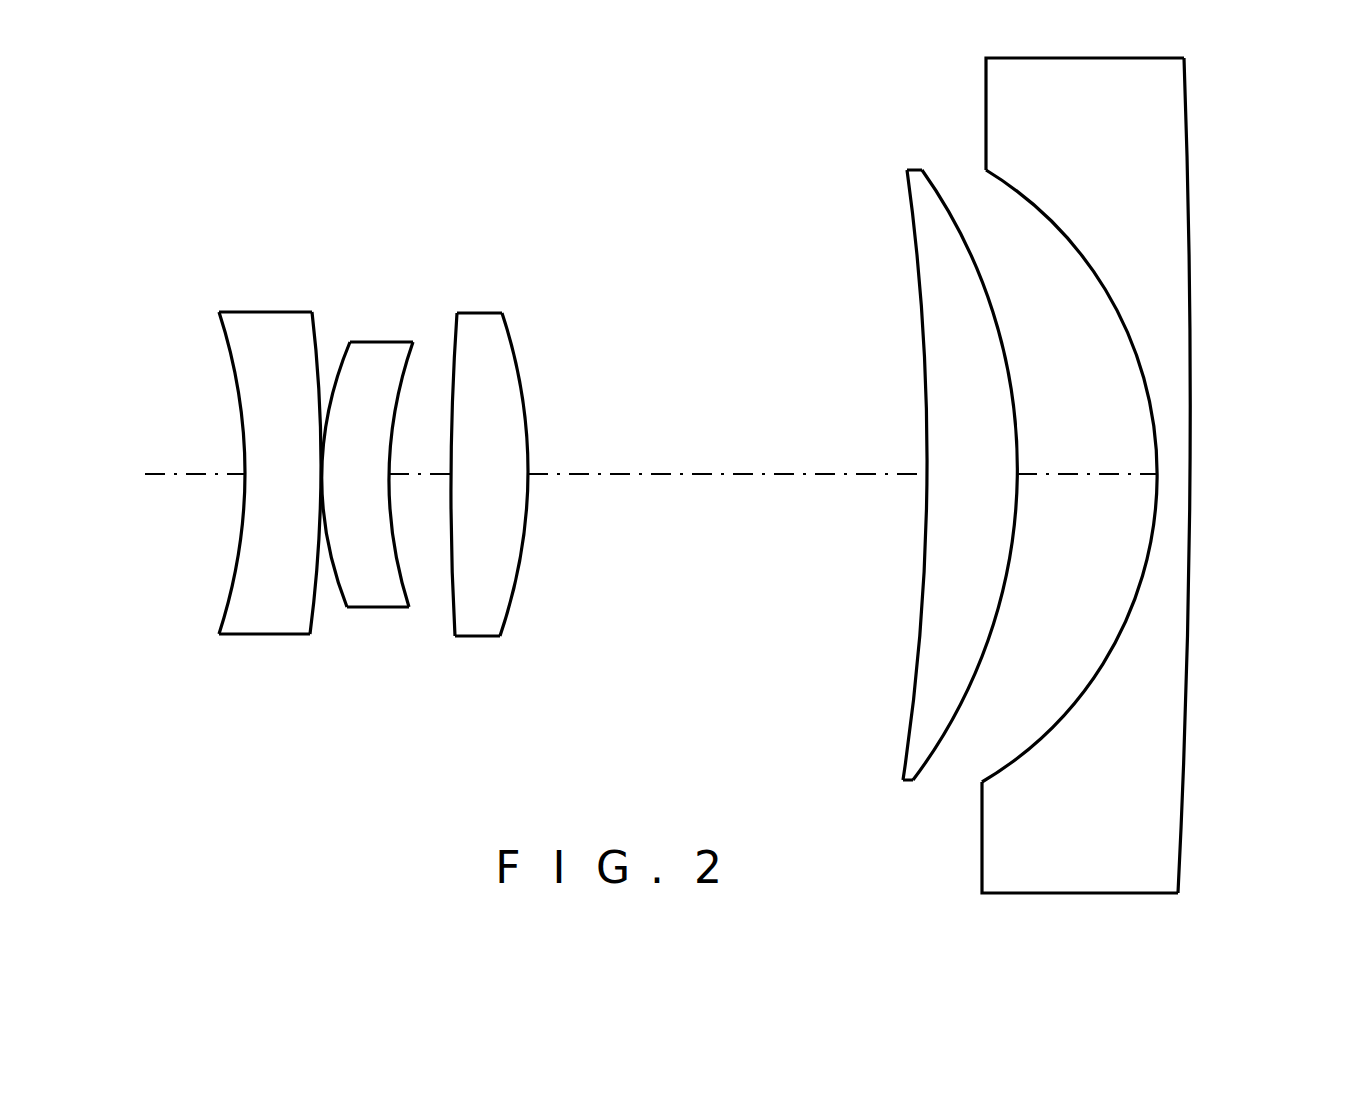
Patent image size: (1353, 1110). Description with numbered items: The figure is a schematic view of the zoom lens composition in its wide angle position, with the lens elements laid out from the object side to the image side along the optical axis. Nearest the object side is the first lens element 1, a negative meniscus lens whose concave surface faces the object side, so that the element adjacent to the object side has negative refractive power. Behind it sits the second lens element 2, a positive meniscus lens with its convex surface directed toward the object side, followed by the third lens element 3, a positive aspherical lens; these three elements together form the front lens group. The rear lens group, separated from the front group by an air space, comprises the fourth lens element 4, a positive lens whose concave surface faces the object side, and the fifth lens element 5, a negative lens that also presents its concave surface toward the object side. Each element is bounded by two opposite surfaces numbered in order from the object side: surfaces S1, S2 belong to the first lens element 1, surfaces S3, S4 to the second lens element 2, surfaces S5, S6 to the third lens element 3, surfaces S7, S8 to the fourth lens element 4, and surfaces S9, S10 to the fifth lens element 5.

The first lens element 1 is at (282, 325).
The second lens element 2 is at (383, 342).
The third lens element 3 is at (490, 327).
The fourth lens element 4 is at (920, 187).
The fifth lens element 5 is at (1167, 135).
The surface of the first lens element S1 is at (233, 577).
The surface of the first lens element S2 is at (310, 612).
The surface of the second lens element S3 is at (343, 353).
The surface of the second lens element S4 is at (402, 377).
The surface of the third lens element S5 is at (450, 600).
The surface of the third lens element S6 is at (510, 603).
The surface of the fourth lens element S7 is at (918, 628).
The surface of the fourth lens element S8 is at (935, 752).
The surface of the fifth lens element S9 is at (1125, 615).
The surface of the fifth lens element S10 is at (1186, 722).